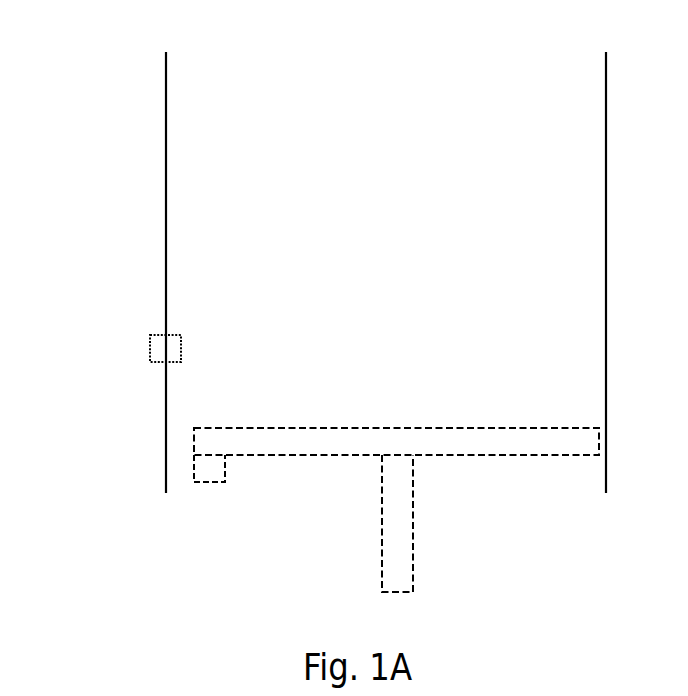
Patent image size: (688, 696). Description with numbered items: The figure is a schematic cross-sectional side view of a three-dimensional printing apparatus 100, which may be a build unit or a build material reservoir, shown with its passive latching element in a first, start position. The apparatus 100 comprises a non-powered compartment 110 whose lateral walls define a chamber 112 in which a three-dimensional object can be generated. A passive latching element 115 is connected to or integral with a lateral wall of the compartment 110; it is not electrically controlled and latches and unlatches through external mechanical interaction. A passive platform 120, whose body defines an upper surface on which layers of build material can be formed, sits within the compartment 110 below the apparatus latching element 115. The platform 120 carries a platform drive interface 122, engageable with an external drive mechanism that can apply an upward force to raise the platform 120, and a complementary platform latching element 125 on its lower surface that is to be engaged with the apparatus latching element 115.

The 3D printing apparatus 100 is at (115, 80).
The compartment 110 is at (166, 117).
The chamber 112 is at (305, 149).
The passive latching element 115 is at (150, 348).
The platform 120 is at (458, 427).
The platform drive interface 122 is at (395, 457).
The platform latching element 125 is at (210, 483).